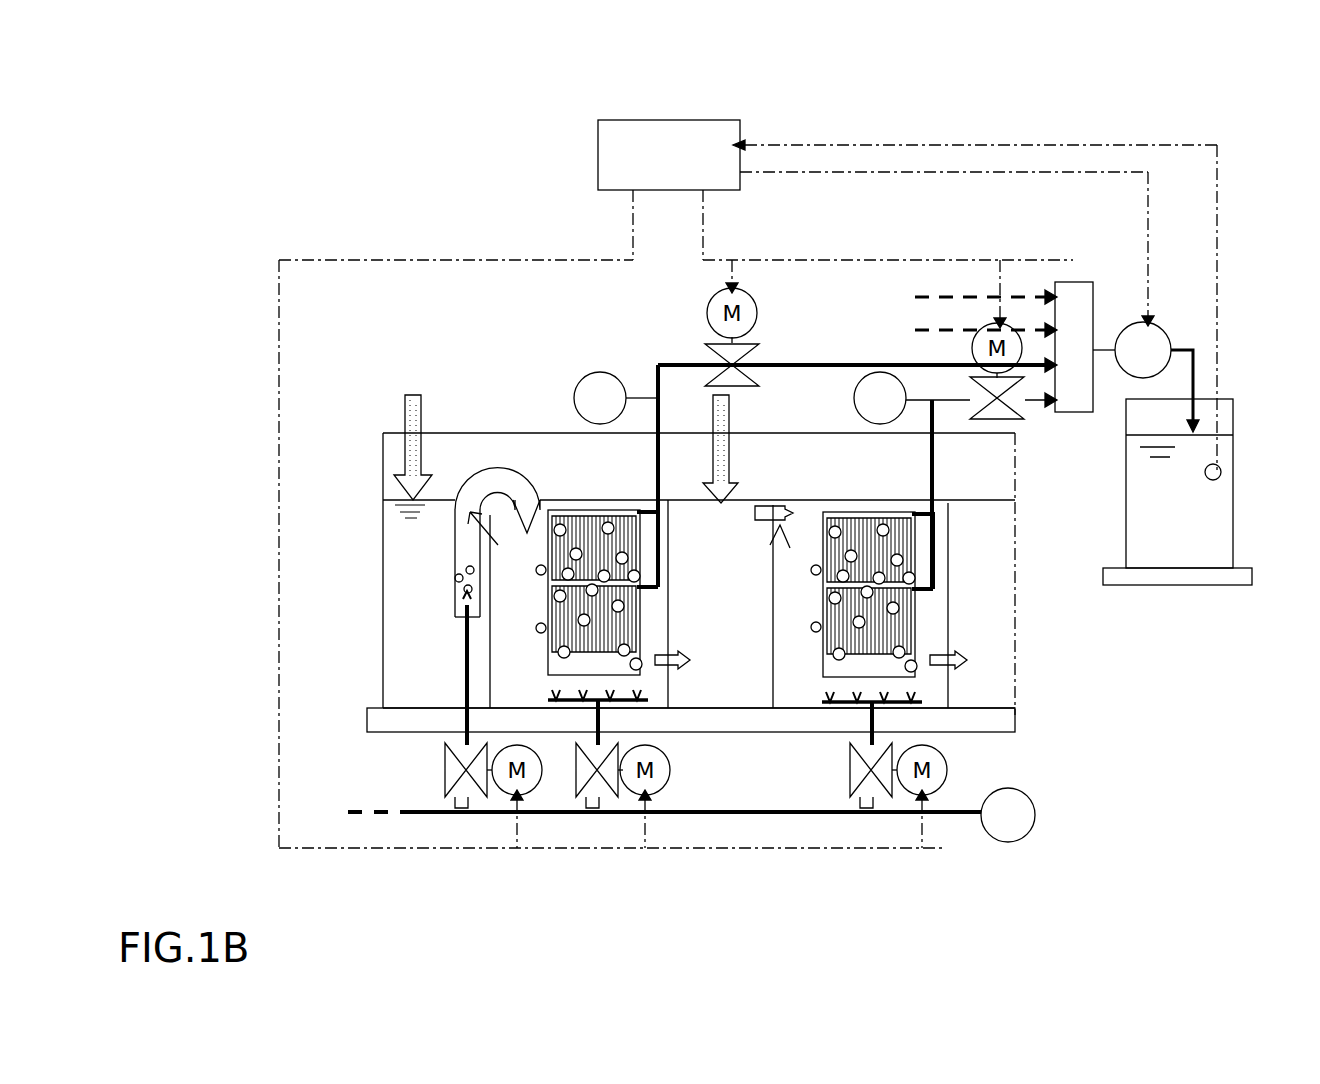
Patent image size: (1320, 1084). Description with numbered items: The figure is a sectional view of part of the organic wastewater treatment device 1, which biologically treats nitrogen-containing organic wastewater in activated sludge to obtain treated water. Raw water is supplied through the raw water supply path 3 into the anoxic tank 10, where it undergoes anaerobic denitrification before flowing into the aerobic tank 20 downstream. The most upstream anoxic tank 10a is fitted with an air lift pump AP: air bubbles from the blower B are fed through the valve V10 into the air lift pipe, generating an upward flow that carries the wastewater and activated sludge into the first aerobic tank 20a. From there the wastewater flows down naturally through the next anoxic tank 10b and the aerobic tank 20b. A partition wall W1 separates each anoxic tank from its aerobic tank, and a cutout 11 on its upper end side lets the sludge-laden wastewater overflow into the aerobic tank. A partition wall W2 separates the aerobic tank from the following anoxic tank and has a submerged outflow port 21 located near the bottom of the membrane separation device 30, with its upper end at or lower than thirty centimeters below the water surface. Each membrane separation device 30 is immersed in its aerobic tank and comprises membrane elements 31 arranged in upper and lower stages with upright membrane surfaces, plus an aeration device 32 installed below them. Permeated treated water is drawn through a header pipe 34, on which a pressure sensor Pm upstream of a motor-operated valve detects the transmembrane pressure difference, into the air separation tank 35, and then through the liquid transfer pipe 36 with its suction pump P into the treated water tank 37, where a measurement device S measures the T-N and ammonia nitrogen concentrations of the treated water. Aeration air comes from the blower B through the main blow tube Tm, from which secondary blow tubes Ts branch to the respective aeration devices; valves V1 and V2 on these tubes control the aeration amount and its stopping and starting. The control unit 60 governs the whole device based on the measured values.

The organic wastewater treatment device 1 is at (838, 110).
The control unit 60 is at (681, 120).
The raw water supply path 3 is at (401, 402).
The anoxic tank 10 is at (1032, 545).
The anoxic tank on the most upstream side 10a is at (460, 700).
The anoxic tank 10b is at (765, 549).
The cutout 11 is at (662, 571).
The aerobic tank 20 is at (531, 671).
The aerobic tank on the downstream side 20a is at (521, 692).
The aerobic tank 20b is at (802, 694).
The outflow port 21 is at (692, 658).
The membrane separation device 30 is at (642, 602).
The membrane element 31 is at (642, 640).
The aeration device 32 is at (653, 698).
The header pipe 34 is at (816, 362).
The air separation tank 35 is at (1070, 284).
The liquid transfer pipe 36 is at (1174, 340).
The treated water tank 37 is at (1183, 555).
The air lift pump AP is at (499, 469).
The measurement device S is at (1221, 470).
The pressure sensor Pm is at (740, 398).
The partition wall W1 is at (497, 585).
The partition wall W2 is at (662, 610).
The valve V10 is at (458, 815).
The valve V1 is at (586, 812).
The valve V2 is at (858, 816).
The secondary blow tube Ts is at (470, 810).
The main blow tube Tm is at (758, 823).
The blower B is at (1008, 815).